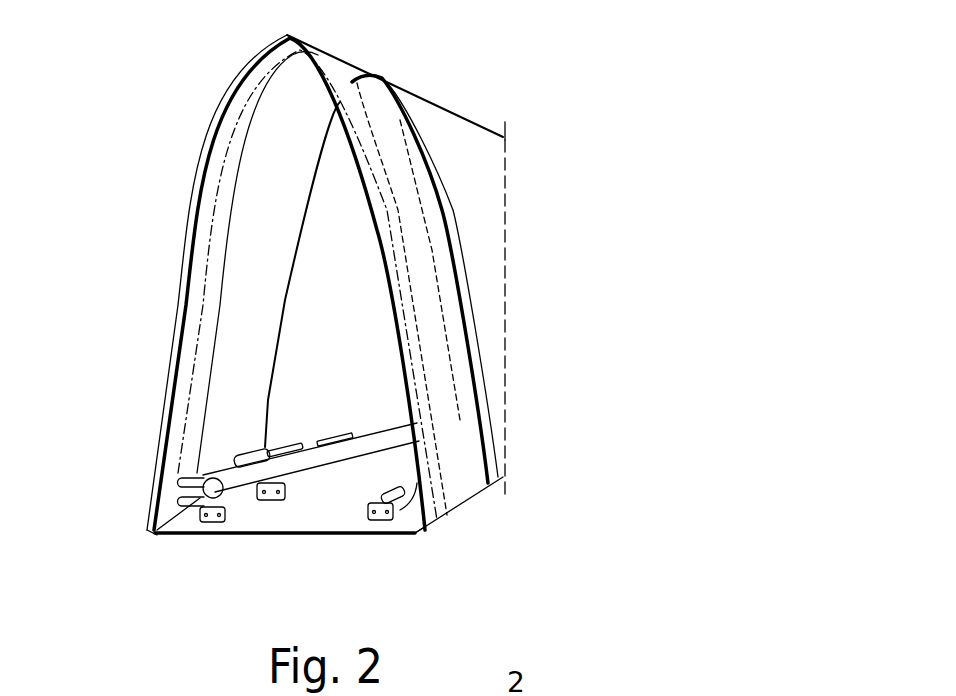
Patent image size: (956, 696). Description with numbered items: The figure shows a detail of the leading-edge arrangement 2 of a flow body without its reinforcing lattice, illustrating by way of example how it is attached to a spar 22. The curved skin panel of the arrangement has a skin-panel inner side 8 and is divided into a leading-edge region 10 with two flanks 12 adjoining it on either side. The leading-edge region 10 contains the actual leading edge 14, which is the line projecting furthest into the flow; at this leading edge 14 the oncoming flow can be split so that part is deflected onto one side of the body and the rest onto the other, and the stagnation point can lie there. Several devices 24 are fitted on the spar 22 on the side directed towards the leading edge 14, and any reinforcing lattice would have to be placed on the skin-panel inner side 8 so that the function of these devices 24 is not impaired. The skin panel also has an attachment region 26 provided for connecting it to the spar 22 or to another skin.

The leading-edge arrangement 2 is at (449, 84).
The skin-panel inner side 8 is at (278, 180).
The leading-edge region 10 is at (272, 5).
The flanks 12 is at (198, 132).
The leading edge 14 is at (484, 122).
The spar 22 is at (248, 517).
The devices 24 is at (327, 430).
The attachment region 26 is at (520, 460).